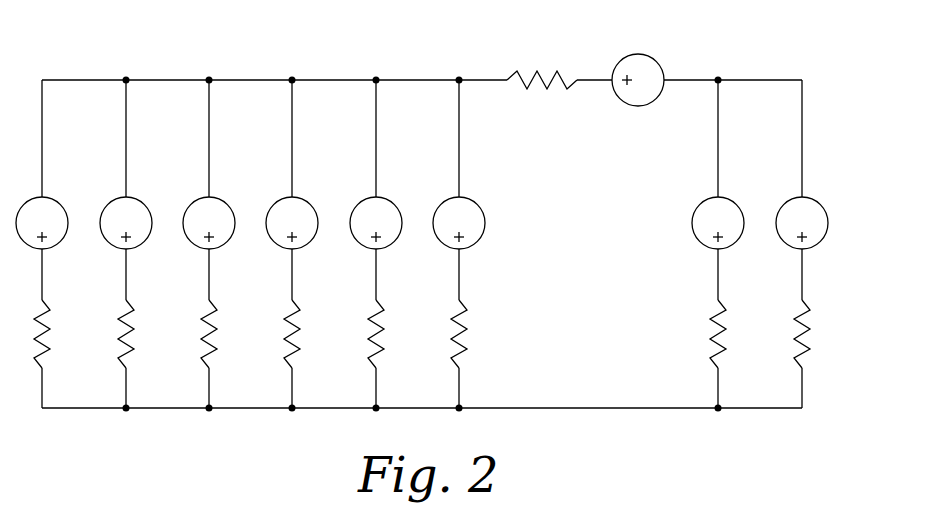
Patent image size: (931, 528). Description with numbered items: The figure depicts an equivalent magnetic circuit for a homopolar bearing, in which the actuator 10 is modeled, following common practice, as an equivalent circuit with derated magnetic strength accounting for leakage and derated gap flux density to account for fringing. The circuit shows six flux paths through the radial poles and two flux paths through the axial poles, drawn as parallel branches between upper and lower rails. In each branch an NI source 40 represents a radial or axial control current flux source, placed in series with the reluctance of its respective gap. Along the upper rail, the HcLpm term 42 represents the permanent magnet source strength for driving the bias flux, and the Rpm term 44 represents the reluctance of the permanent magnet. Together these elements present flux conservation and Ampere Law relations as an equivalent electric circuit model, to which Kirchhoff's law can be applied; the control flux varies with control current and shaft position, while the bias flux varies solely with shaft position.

The actuator 10 is at (153, 46).
The NI sources 40 is at (59, 203).
The HcLpm term 42 is at (648, 56).
The Rpm term 44 is at (532, 72).